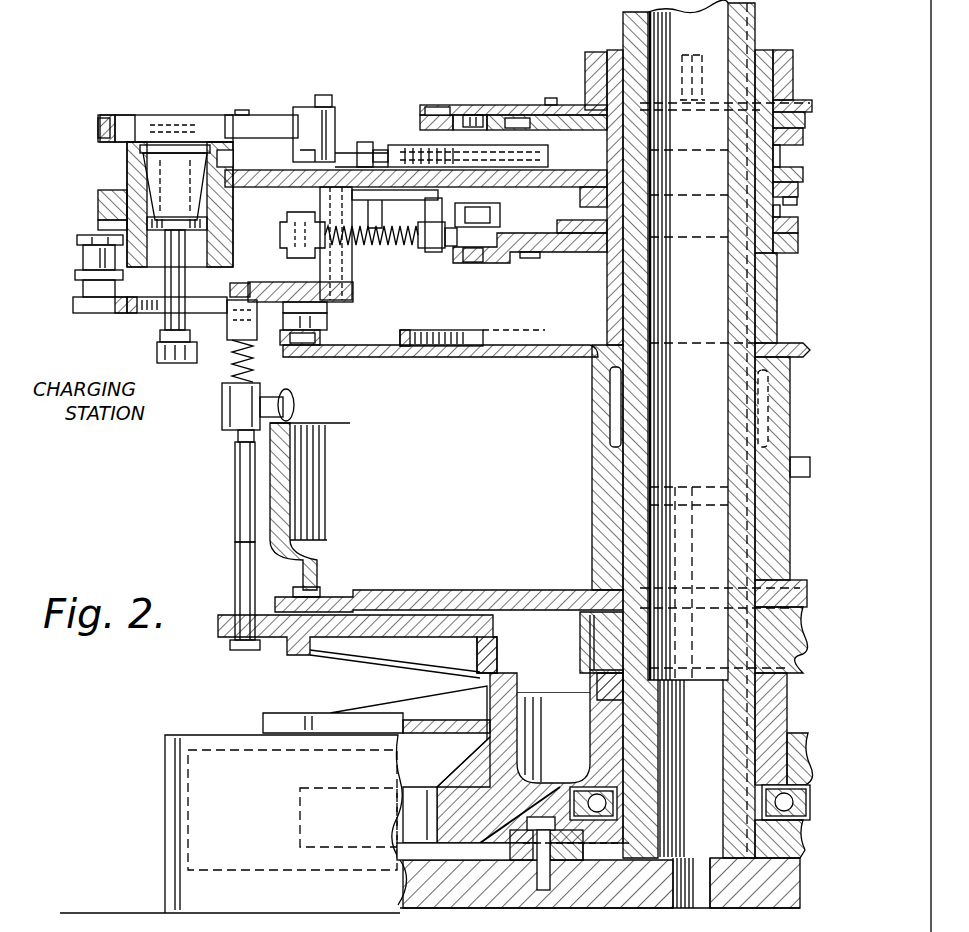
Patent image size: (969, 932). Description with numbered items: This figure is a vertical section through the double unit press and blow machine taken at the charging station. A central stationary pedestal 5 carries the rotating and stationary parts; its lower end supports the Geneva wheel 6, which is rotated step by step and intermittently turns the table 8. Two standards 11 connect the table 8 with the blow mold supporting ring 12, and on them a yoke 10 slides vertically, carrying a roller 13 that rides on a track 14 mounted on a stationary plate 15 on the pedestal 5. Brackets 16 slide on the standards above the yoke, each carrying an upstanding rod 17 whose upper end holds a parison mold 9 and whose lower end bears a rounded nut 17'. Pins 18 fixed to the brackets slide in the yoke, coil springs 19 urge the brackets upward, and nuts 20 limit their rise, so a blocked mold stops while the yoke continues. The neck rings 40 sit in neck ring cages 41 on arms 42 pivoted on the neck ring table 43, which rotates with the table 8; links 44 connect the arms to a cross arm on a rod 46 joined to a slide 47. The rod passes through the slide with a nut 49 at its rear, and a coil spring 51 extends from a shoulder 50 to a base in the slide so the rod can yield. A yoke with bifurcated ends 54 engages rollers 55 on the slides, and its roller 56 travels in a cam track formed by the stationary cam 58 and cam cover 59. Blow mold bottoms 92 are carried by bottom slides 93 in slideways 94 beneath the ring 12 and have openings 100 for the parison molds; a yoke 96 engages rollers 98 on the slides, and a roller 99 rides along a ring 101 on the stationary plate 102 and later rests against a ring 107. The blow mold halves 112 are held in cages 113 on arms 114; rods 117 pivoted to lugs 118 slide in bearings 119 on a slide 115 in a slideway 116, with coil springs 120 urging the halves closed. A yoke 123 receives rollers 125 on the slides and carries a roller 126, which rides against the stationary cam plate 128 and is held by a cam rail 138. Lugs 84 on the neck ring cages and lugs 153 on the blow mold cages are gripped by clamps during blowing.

The central stationary pedestal 5 is at (660, 746).
The Geneva wheel 6 is at (405, 812).
The table 8 is at (215, 620).
The parison mold 9 is at (150, 174).
The yoke 10 is at (222, 421).
The standards 11 is at (235, 527).
The blow mold supporting ring 12 is at (353, 300).
The roller 13 is at (270, 422).
The track 14 is at (300, 427).
The stationary plate 15 is at (460, 593).
The brackets 16 is at (195, 356).
The upstanding rod 17 is at (157, 280).
The rounded nuts 17' is at (144, 350).
The pins 18 is at (225, 364).
The coil springs 19 is at (232, 372).
The nuts 20 is at (238, 440).
The neck rings 40 is at (205, 120).
The neck ring cages 41 is at (126, 119).
The arms 42 is at (251, 116).
The neck ring table 43 is at (652, 215).
The links 44 is at (300, 143).
The rod 46 is at (355, 170).
The slide 47 is at (362, 145).
The nut 49 is at (573, 100).
The shoulder 50 is at (385, 150).
The coil spring 51 is at (410, 145).
The bifurcated ends 54 is at (540, 108).
The rollers 55 is at (456, 118).
The roller 56 is at (472, 116).
The stationary cam 58 is at (518, 118).
The cam cover 59 is at (428, 106).
The lugs 84 is at (98, 122).
The blow mold bottoms 92 is at (78, 241).
The bottom slide 93 is at (88, 313).
The slideways 94 is at (327, 310).
The yoke 96 is at (327, 323).
The roller 98 is at (322, 340).
The roller 99 is at (312, 342).
The openings 100 is at (148, 313).
The ring 101 is at (291, 387).
The stationary plate 102 is at (548, 359).
The ring 107 is at (418, 331).
The blow mold halves 112 is at (128, 152).
The cages 113 is at (98, 226).
The arms 114 is at (233, 267).
The slide 115 is at (425, 203).
The slideway 116 is at (352, 194).
The rods 117 is at (385, 248).
The lugs 118 is at (280, 242).
The bearings 119 is at (435, 249).
The coil springs 120 is at (392, 252).
The yoke 123 is at (495, 214).
The rollers 125 is at (510, 230).
The roller 126 is at (505, 263).
The stationary cam plate 128 is at (540, 258).
The cam rail 138 is at (468, 263).
The lugs 153 is at (100, 196).